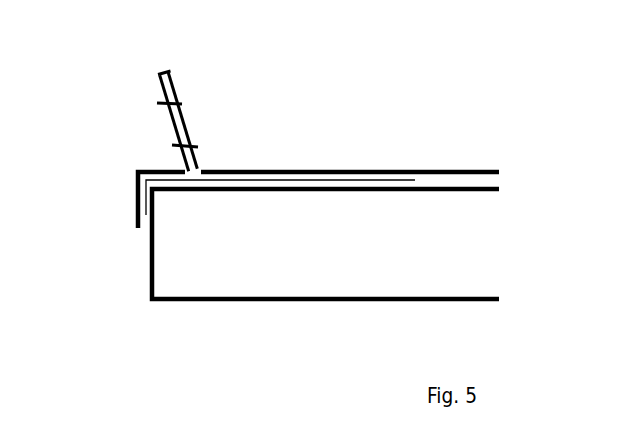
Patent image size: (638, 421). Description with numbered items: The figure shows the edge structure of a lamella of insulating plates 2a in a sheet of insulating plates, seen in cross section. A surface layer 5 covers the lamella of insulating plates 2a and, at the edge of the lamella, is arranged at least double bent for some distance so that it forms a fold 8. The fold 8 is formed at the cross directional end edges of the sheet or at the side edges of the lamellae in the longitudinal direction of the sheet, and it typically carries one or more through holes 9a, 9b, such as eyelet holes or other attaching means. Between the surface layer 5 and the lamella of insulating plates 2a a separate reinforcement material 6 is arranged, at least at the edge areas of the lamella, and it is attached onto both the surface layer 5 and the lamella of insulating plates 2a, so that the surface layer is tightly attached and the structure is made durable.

The lamella of insulating plates 2a is at (252, 268).
The surface layer 5 is at (413, 172).
The reinforcement material 6 is at (272, 180).
The fold 8 is at (162, 98).
The through hole 9a is at (180, 98).
The through hole 9b is at (195, 136).